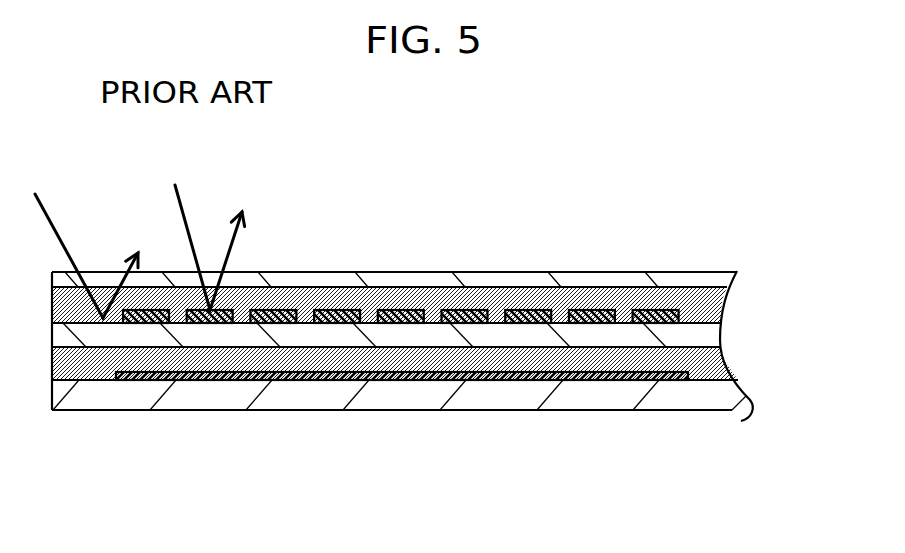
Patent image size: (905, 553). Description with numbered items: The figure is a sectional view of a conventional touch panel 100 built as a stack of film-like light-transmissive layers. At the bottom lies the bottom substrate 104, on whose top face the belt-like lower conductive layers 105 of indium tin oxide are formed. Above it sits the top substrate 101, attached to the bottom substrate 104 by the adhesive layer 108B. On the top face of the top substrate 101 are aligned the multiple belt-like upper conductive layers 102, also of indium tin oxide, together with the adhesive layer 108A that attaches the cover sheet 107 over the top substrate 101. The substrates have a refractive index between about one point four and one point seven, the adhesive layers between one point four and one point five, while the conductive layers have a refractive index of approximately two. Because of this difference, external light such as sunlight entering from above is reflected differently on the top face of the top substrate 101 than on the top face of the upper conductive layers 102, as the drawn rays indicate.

The touch panel 100 is at (742, 182).
The top substrate 101 is at (707, 338).
The upper conductive layers 102 is at (590, 310).
The bottom substrate 104 is at (680, 397).
The lower conductive layers 105 is at (438, 372).
The cover sheet 107 is at (653, 280).
The adhesive layer 108A is at (172, 299).
The adhesive layer 108B is at (258, 358).